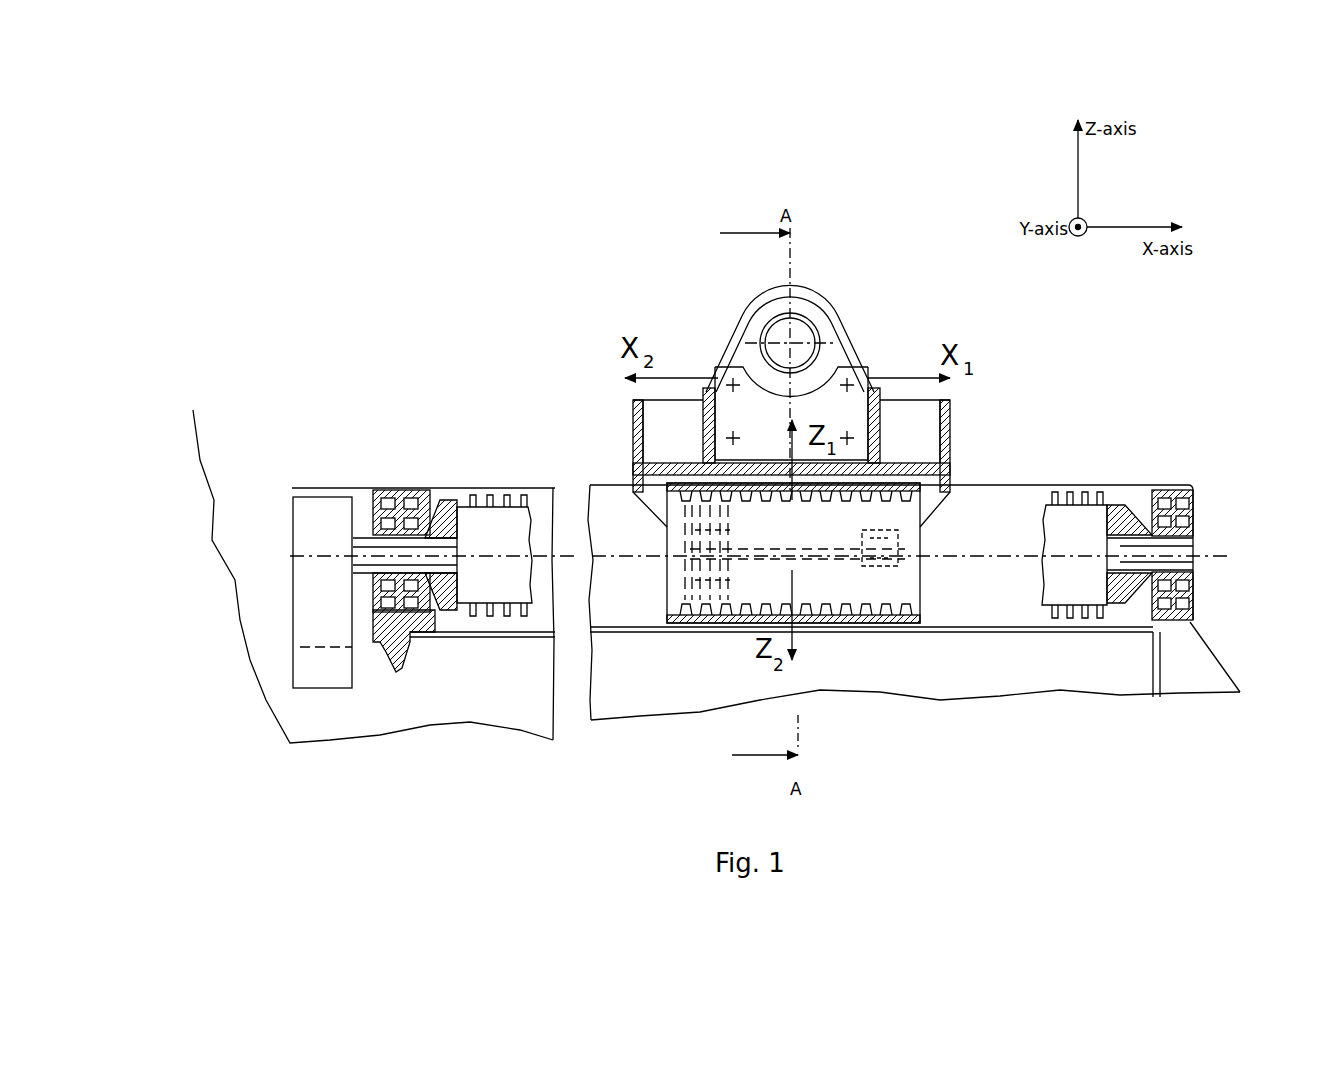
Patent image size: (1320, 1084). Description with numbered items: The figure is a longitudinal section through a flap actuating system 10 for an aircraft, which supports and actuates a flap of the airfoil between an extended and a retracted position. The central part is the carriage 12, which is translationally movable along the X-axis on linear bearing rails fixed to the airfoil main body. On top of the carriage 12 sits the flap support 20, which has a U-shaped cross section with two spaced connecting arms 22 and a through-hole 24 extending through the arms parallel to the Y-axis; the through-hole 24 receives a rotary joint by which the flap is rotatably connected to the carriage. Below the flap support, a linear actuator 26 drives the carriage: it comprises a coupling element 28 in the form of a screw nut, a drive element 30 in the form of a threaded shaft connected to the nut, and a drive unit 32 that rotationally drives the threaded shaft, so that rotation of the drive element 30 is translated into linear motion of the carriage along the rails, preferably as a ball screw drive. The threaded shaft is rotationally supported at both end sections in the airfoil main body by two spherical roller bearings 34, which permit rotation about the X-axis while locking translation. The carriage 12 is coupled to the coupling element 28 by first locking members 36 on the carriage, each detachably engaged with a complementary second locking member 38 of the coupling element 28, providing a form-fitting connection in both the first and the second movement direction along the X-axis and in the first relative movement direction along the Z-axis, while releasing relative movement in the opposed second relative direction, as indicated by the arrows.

The flap actuating system 10 is at (252, 210).
The carriage 12 is at (605, 425).
The flap support 20 is at (840, 354).
The connecting arms 22 is at (815, 310).
The through-hole 24 is at (790, 343).
The linear actuator 26 is at (458, 692).
The coupling element 28 is at (830, 590).
The drive element 30 is at (478, 592).
The drive unit 32 is at (305, 520).
The spherical roller bearings 34 is at (394, 506).
The first locking members 36 is at (900, 540).
The second locking members 38 is at (867, 568).